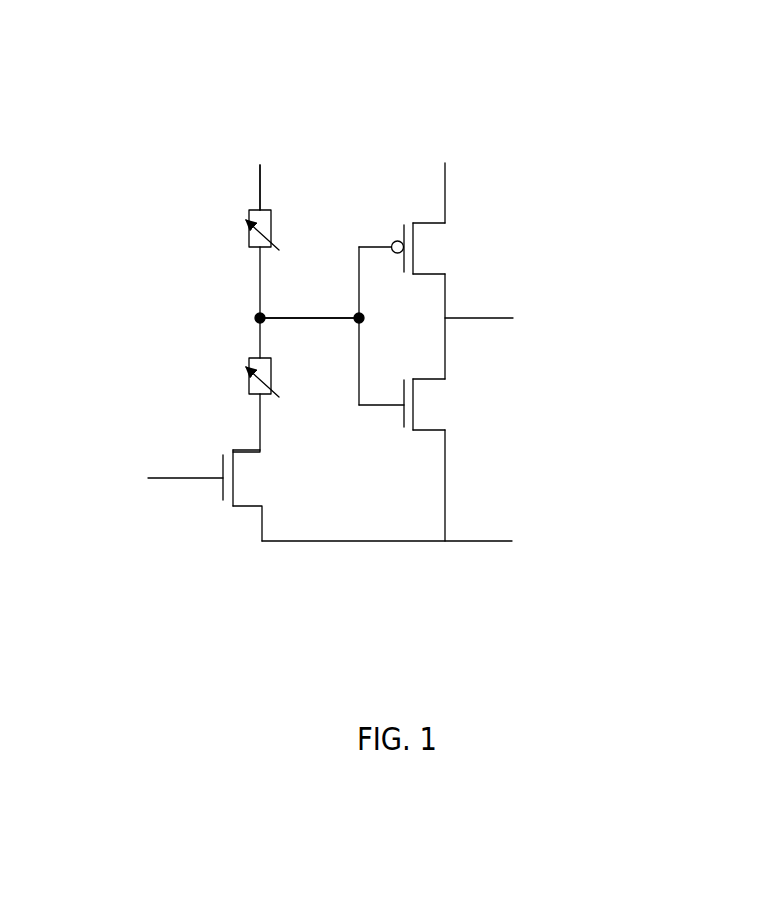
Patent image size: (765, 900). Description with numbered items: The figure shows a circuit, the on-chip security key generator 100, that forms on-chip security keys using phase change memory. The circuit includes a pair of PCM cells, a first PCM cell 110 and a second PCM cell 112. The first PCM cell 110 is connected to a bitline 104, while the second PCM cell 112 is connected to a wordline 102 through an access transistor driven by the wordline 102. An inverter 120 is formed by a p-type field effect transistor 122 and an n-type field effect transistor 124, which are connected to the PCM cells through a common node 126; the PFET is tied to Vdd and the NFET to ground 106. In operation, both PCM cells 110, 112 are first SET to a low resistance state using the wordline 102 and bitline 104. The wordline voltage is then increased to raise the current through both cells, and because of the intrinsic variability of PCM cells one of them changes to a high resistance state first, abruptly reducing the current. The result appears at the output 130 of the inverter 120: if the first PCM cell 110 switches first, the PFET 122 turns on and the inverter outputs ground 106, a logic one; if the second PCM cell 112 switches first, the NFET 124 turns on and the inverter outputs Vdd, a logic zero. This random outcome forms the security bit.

The on-chip security key generator 100 is at (251, 57).
The wordline 102 is at (157, 495).
The bitline 104 is at (296, 169).
The ground 106 is at (454, 543).
The first PCM cell 110 is at (271, 218).
The second PCM cell 112 is at (271, 366).
The inverter 120 is at (405, 189).
The p-type field effect transistor 122 is at (447, 240).
The n-type field effect transistor 124 is at (437, 408).
The common node 126 is at (364, 316).
The output 130 is at (503, 317).